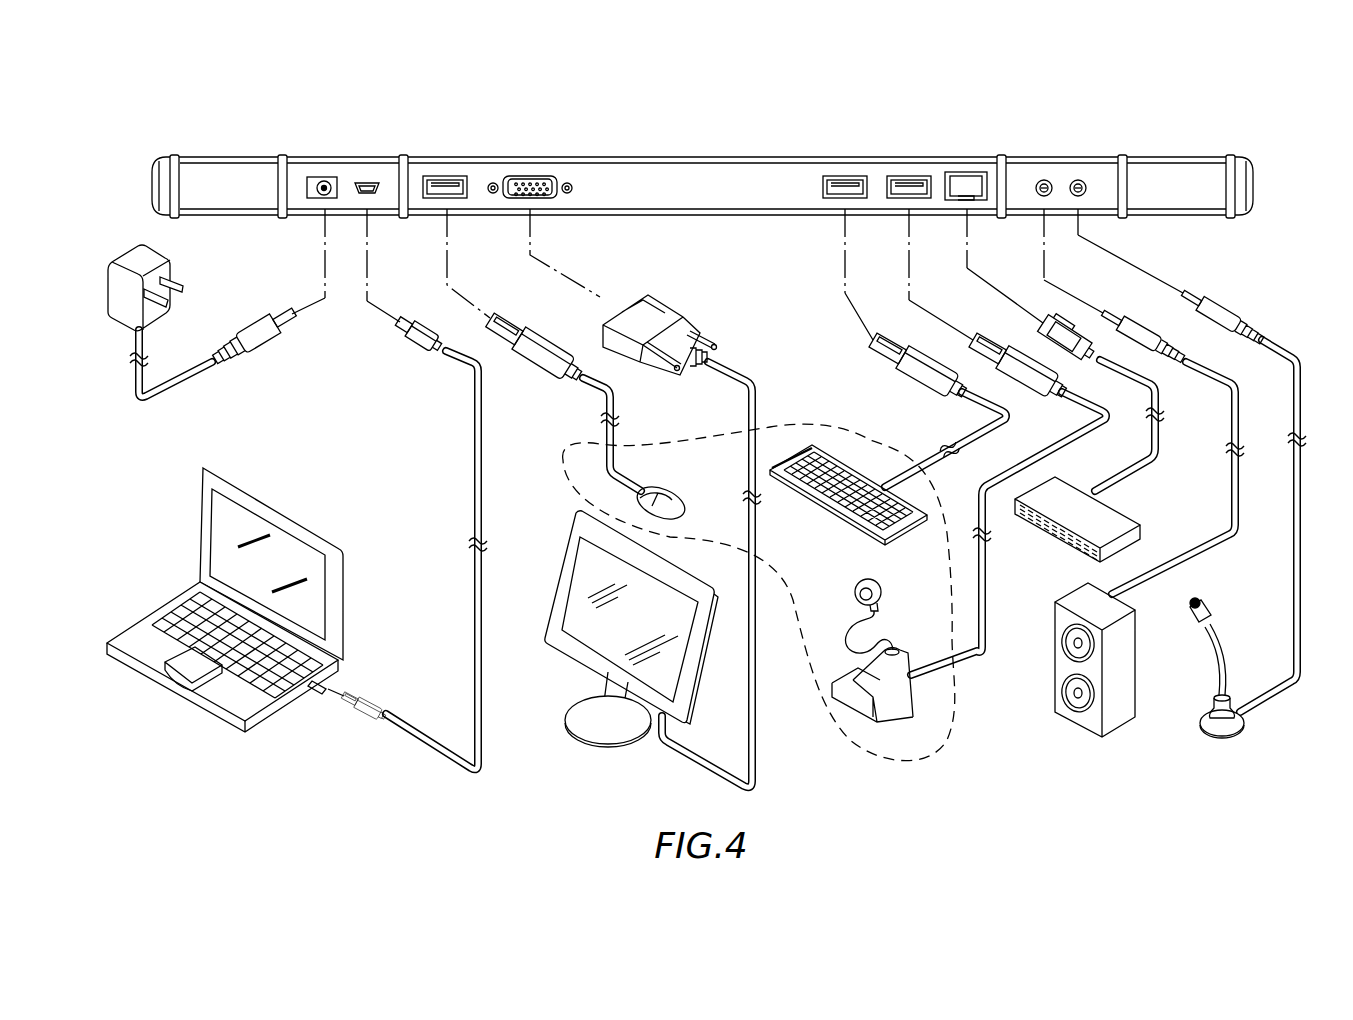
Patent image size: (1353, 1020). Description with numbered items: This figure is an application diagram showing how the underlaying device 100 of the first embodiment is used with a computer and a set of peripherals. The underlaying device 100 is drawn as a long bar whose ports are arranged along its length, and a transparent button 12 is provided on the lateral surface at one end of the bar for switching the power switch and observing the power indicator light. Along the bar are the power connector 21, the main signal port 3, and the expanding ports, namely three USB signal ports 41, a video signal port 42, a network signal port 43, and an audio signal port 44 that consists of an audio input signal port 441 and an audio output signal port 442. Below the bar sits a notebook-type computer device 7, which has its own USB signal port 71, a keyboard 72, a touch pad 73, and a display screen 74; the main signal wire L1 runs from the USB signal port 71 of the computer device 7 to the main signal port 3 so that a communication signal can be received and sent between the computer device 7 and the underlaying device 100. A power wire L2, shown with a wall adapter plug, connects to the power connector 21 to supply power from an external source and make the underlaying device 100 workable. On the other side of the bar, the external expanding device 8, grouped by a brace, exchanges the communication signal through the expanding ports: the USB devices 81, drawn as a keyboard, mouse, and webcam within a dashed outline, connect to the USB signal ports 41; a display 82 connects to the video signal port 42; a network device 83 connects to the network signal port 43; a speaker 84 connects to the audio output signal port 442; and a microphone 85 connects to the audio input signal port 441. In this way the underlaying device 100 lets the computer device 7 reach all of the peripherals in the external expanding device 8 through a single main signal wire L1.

The underlaying device 100 is at (1179, 167).
The button 12 is at (153, 188).
The power connector 21 is at (323, 177).
The main signal port 3 is at (367, 182).
The USB signal port 41 is at (447, 176).
The video signal port 42 is at (530, 176).
The network signal port 43 is at (967, 172).
The audio signal port 44 is at (1013, 97).
The audio input signal port 441 is at (1078, 179).
The audio output signal port 442 is at (1044, 179).
The computer device 7 is at (138, 652).
The USB signal port of the computer device 71 is at (318, 696).
The keyboard 72 is at (175, 612).
The touch pad 73 is at (205, 674).
The display screen of notebook 74 is at (292, 556).
The main signal wire L1 is at (477, 480).
The power wire L2 is at (187, 378).
The external expanding device 8 is at (575, 808).
The USB devices 81 is at (787, 437).
The display 82 is at (611, 732).
The network device 83 is at (1110, 508).
The speaker 84 is at (1115, 718).
The microphone 85 is at (1222, 722).